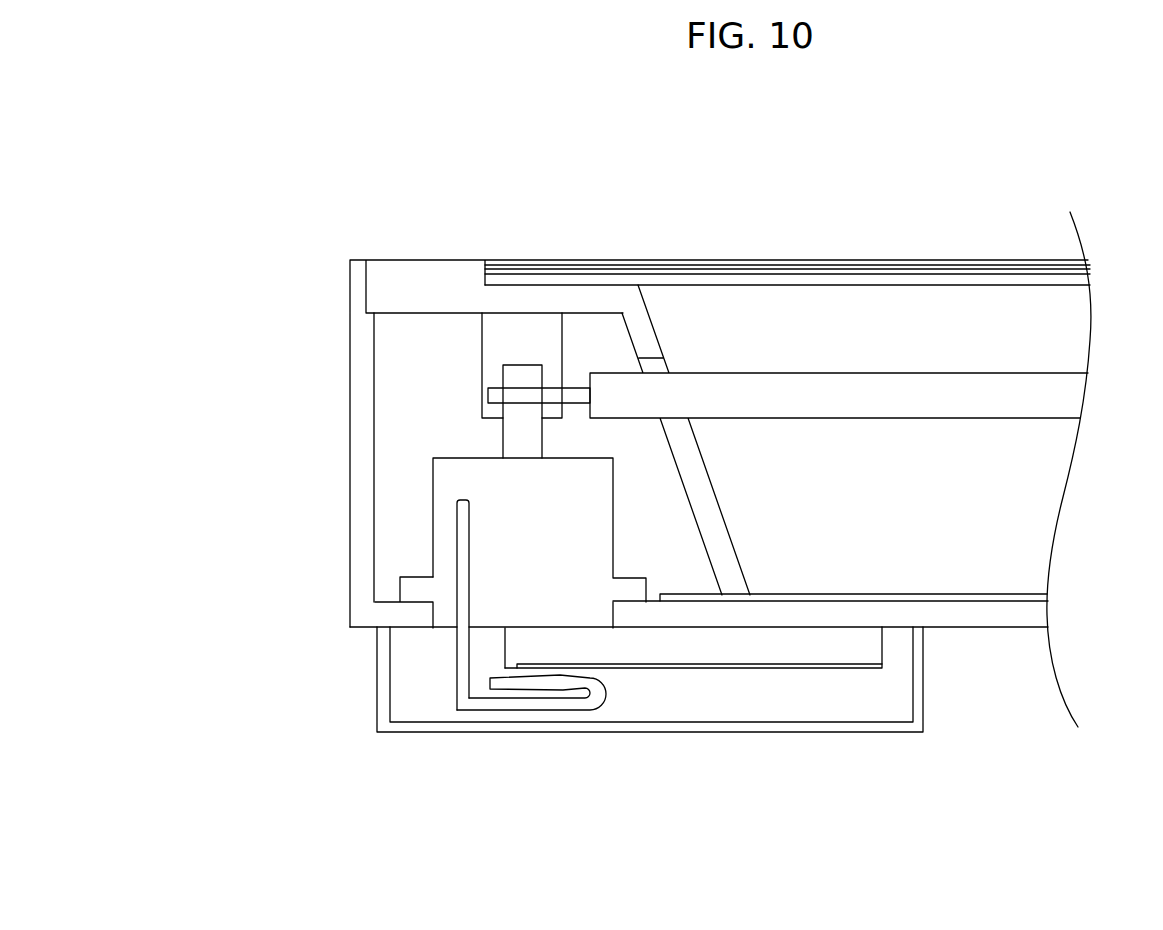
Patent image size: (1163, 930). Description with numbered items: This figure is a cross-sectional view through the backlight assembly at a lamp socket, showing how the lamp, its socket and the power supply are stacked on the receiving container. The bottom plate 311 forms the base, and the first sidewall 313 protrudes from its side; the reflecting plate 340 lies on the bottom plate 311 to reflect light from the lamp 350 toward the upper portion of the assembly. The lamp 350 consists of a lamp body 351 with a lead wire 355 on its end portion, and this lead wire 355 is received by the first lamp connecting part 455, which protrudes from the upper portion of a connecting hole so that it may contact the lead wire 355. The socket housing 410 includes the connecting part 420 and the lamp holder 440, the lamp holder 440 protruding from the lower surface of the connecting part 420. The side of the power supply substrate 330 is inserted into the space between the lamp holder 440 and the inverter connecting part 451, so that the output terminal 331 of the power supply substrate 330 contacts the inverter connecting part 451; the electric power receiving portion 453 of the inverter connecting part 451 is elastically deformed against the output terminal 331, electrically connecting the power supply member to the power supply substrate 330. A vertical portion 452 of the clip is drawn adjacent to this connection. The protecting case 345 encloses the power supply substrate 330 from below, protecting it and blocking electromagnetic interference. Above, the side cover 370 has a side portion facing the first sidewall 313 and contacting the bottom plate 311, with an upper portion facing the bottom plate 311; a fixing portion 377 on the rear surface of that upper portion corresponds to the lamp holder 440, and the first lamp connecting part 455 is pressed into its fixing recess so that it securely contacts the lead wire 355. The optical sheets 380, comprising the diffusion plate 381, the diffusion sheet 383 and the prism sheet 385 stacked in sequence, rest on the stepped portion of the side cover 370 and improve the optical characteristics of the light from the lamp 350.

The side cover 370 is at (395, 277).
The fixing portion 377 is at (497, 337).
The first sidewall 313 is at (360, 383).
The optical sheets 380 is at (787, 206).
The prism sheet 385 is at (752, 265).
The diffusion sheet 383 is at (803, 272).
The diffusion plate 381 is at (730, 173).
The lamp 350 is at (788, 361).
The lead wire 355 is at (557, 397).
The lamp body 351 is at (632, 397).
The first lamp connecting part 455 is at (523, 365).
The socket housing 410 is at (408, 563).
The lamp holder 440 is at (455, 481).
The connecting part 420 is at (418, 592).
The reflecting plate 340 is at (1023, 598).
The bottom plate 311 is at (1030, 615).
The protecting case 345 is at (918, 715).
The power supply substrate 330 is at (742, 650).
The output terminal 331 is at (597, 665).
The inverter connecting part 451 is at (531, 674).
The vertical portion of clip 452 is at (495, 707).
The electric power receiving portion 453 is at (565, 690).